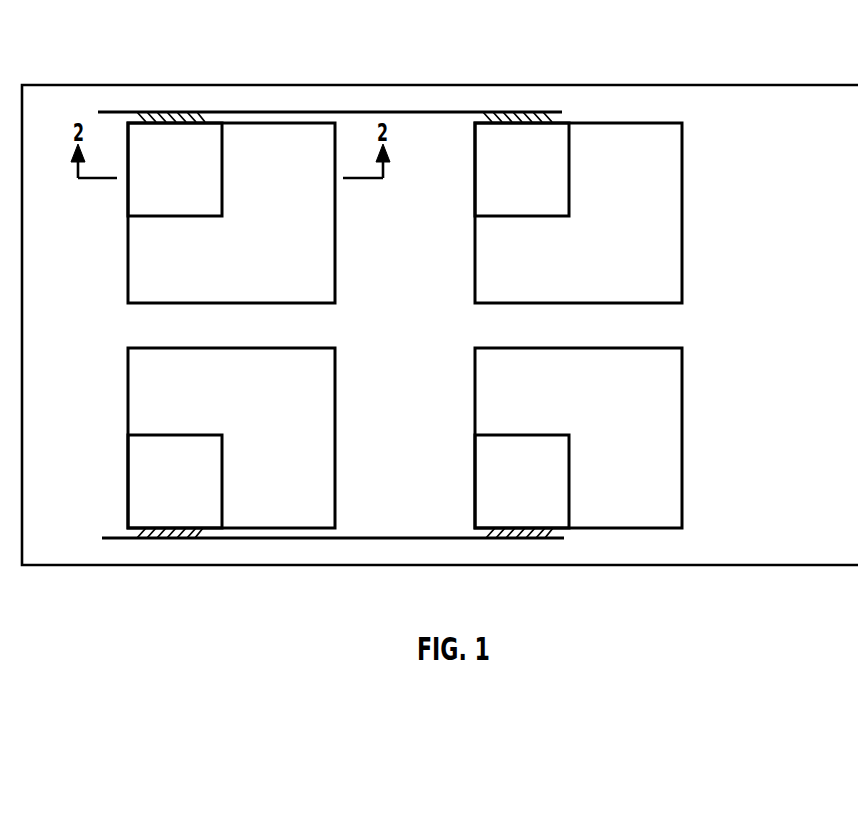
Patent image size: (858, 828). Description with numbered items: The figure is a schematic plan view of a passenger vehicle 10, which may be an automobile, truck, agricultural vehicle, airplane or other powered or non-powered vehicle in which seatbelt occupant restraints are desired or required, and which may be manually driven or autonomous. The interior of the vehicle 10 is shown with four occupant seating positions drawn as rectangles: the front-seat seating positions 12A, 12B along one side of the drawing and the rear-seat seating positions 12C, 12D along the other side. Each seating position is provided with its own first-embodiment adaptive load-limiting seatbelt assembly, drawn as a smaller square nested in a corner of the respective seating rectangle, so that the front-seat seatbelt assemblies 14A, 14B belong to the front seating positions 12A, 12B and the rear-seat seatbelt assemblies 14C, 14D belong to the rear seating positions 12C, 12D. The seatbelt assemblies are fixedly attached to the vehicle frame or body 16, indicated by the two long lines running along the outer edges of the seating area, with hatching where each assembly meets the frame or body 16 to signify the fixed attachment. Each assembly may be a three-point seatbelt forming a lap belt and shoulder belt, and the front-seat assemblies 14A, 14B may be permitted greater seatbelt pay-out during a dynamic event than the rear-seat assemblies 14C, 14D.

The passenger vehicle 10 is at (834, 136).
The front-seat seating position 12A is at (644, 266).
The front-seat seating position 12B is at (644, 488).
The rear-seat seating position 12C is at (297, 266).
The rear-seat seating position 12D is at (297, 488).
The front-seat seatbelt assembly 14A is at (542, 181).
The front-seat seatbelt assembly 14B is at (542, 495).
The rear-seat seatbelt assembly 14C is at (195, 181).
The rear-seat seatbelt assembly 14D is at (195, 495).
The vehicle frame or body 16 is at (423, 113).